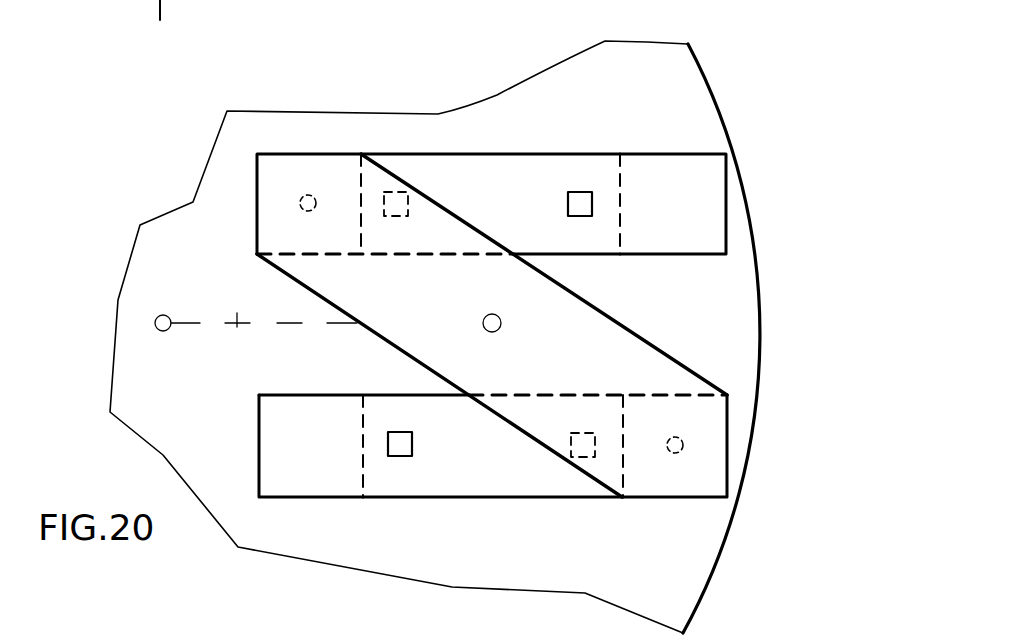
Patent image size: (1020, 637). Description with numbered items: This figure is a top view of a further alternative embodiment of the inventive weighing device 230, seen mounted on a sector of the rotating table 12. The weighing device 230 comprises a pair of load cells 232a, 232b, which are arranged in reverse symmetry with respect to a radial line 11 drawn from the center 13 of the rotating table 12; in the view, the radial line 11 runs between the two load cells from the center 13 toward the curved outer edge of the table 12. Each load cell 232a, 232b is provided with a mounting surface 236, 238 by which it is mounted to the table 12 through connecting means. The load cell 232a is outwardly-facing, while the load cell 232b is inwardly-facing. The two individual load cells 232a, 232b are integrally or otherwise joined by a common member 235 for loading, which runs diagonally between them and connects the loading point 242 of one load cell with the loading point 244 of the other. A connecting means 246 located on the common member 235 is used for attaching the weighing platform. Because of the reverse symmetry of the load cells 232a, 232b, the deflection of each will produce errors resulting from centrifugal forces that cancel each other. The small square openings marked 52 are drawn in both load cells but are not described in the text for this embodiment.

The radial line 11 is at (237, 320).
The rotating table 12 is at (757, 265).
The center 13 is at (157, 317).
The fastener holes 52 is at (577, 207).
The weighing device 230 is at (529, 319).
The load cell 232a is at (516, 513).
The load cell 232b is at (535, 130).
The common member 235 is at (682, 358).
The mounting surface 236 is at (313, 500).
The mounting surface 238 is at (726, 223).
The loading point 242 is at (677, 500).
The loading point 244 is at (327, 153).
The connecting means 246 is at (500, 321).